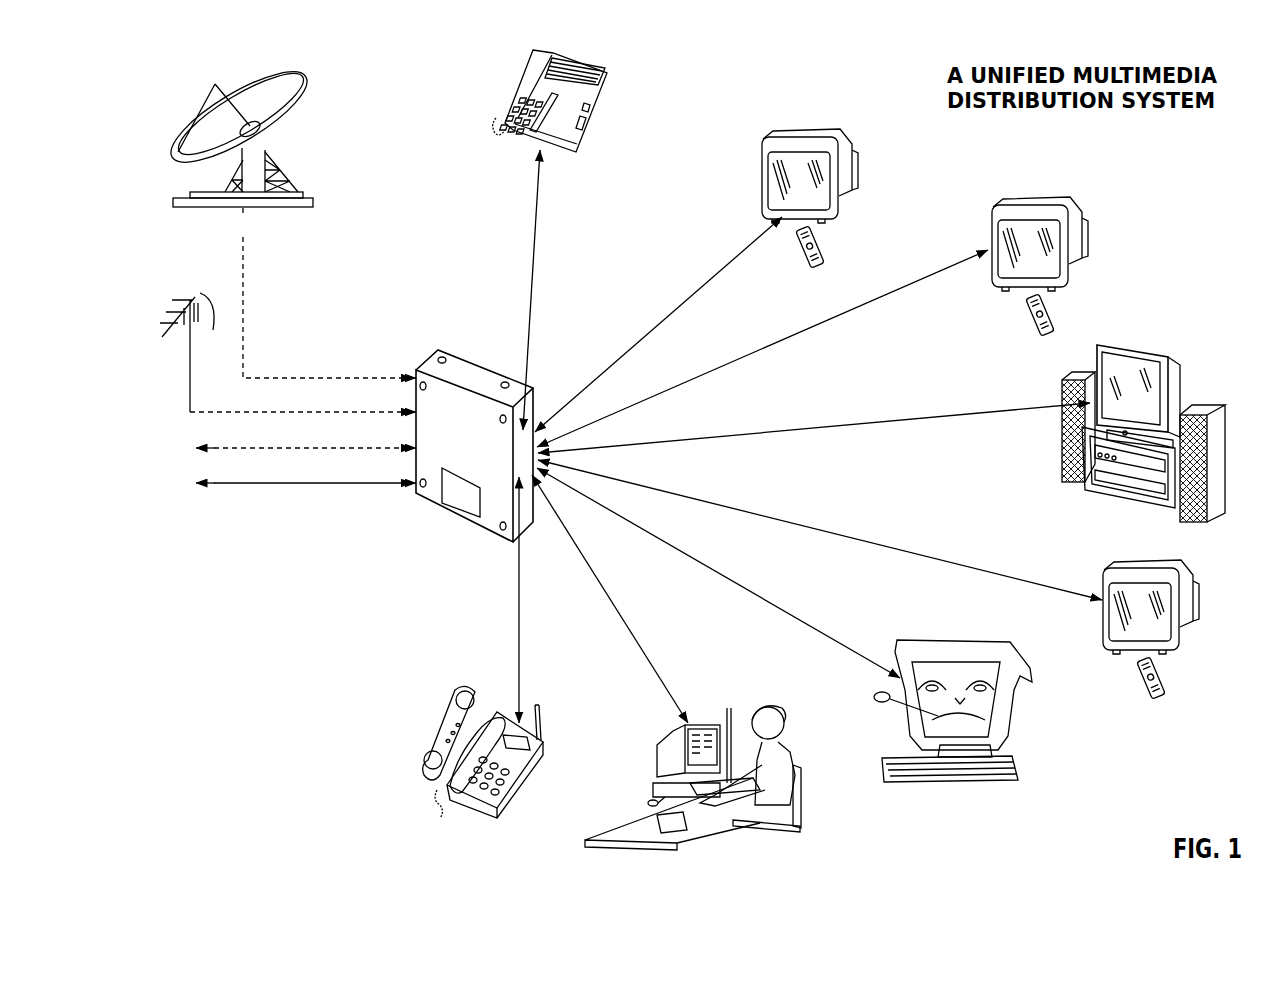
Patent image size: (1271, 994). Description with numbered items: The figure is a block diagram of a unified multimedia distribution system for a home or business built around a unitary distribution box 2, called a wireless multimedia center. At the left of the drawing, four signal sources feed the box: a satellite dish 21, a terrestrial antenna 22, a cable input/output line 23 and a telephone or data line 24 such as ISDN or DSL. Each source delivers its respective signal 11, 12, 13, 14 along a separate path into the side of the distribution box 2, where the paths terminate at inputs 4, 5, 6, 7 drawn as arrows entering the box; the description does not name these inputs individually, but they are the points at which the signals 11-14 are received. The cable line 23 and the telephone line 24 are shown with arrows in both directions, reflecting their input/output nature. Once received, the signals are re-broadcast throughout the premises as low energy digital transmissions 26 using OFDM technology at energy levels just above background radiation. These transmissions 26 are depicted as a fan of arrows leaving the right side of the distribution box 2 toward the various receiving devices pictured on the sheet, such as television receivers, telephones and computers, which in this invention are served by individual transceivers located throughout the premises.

The unitary distribution box 2 is at (466, 373).
The satellite input port 4 is at (413, 374).
The terrestrial input port 5 is at (413, 409).
The cable/fiber input port 6 is at (413, 445).
The telephone line port 7 is at (413, 480).
The satellite dish signal 11 is at (244, 292).
The terrestrial antenna signal 12 is at (235, 412).
The cable input/output signal 13 is at (240, 450).
The telephone or data line signal 14 is at (302, 484).
The satellite dish 21 is at (307, 90).
The terrestrial antenna 22 is at (188, 340).
The cable input/output line 23 is at (207, 444).
The telephone or data line 24 is at (236, 486).
The low energy digital transmissions 26 is at (537, 434).